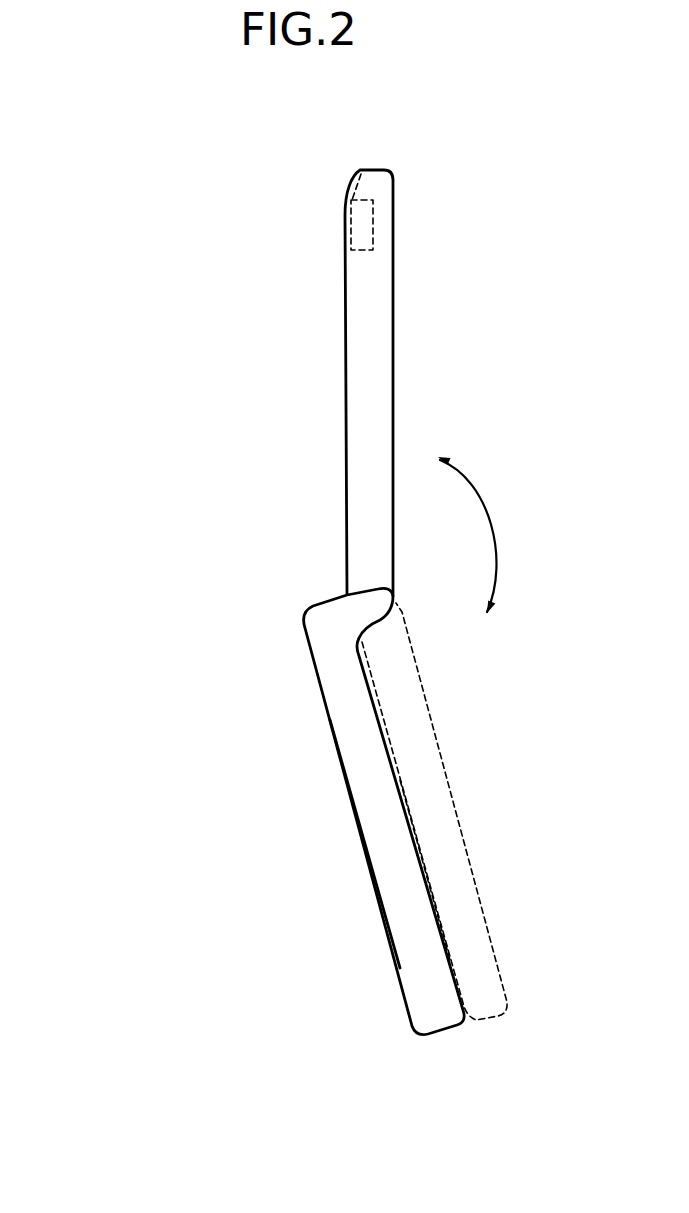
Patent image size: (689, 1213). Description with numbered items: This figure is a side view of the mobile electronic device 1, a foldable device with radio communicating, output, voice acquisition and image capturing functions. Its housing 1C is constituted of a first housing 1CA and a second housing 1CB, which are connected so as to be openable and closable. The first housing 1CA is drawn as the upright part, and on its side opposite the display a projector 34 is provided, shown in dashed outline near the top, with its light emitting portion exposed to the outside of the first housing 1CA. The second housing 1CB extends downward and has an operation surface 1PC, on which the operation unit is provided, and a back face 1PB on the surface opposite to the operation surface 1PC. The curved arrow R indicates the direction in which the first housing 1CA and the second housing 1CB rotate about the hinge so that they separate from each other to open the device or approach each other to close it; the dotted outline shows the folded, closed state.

The mobile electronic device 1 is at (241, 186).
The housing 1C is at (100, 540).
The first housing 1CA is at (362, 540).
The second housing 1CB is at (330, 688).
The projector 34 is at (358, 166).
The back face 1PB is at (359, 856).
The operation surface 1PC is at (453, 925).
The arrow R is at (488, 518).